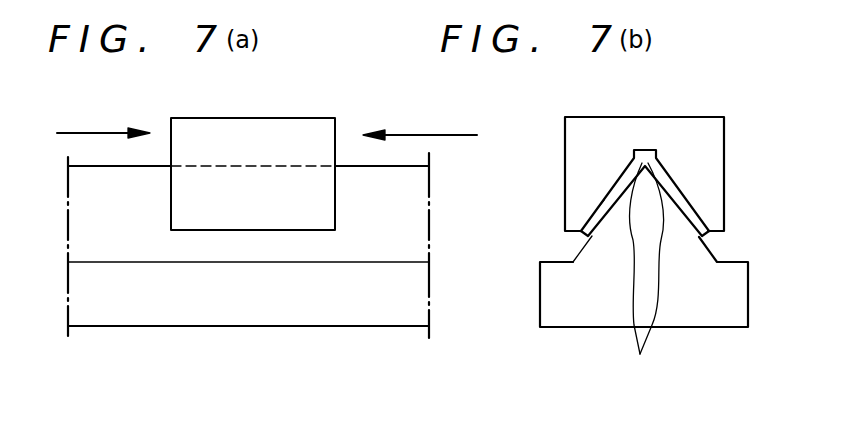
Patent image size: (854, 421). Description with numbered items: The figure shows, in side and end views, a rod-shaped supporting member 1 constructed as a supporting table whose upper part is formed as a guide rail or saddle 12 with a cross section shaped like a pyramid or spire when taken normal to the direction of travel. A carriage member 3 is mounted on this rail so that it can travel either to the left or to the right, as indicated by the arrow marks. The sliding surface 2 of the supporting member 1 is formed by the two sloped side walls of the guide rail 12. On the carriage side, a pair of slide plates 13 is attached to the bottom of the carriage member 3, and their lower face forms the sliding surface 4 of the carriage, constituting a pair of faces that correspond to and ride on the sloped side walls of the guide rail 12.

In FIG. 7A, the rod-shaped supporting member 1 is at (358, 313).
In FIG. 7B, the rod-shaped supporting member 1 is at (683, 318).
In FIG. 7B, the sliding surface 2 is at (687, 218).
In FIG. 7A, the carriage member 3 is at (292, 136).
In FIG. 7B, the carriage member 3 is at (676, 134).
In FIG. 7B, the sliding surface 4 is at (647, 277).
In FIG. 7A, the guide rail 12 is at (400, 197).
In FIG. 7B, the guide rail 12 is at (613, 233).
In FIG. 7B, the slide plates 13 is at (612, 190).